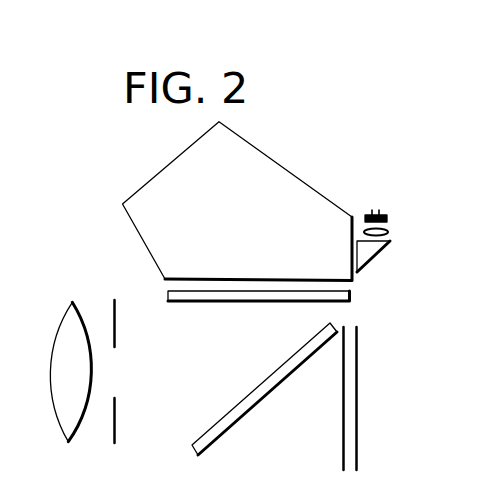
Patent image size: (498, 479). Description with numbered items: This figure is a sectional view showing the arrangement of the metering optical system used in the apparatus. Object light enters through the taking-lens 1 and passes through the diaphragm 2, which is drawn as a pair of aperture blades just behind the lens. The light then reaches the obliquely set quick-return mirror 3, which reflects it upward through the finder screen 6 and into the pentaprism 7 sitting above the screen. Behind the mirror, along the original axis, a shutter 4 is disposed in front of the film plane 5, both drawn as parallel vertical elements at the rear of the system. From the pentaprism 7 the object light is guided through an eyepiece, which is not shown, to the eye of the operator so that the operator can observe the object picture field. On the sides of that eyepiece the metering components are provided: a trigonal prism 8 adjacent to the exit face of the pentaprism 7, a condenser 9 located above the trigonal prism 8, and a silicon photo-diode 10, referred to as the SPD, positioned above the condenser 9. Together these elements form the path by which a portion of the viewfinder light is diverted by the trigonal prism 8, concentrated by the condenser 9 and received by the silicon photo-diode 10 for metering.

The taking-lens 1 is at (58, 427).
The diaphragm 2 is at (115, 432).
The quick-return mirror 3 is at (235, 423).
The shutter 4 is at (342, 448).
The film plane 5 is at (358, 341).
The finder screen 6 is at (197, 301).
The pentaprism 7 is at (315, 198).
The trigonal prism 8 is at (381, 252).
The condenser 9 is at (388, 232).
The silicon photo-diode 10 is at (387, 217).